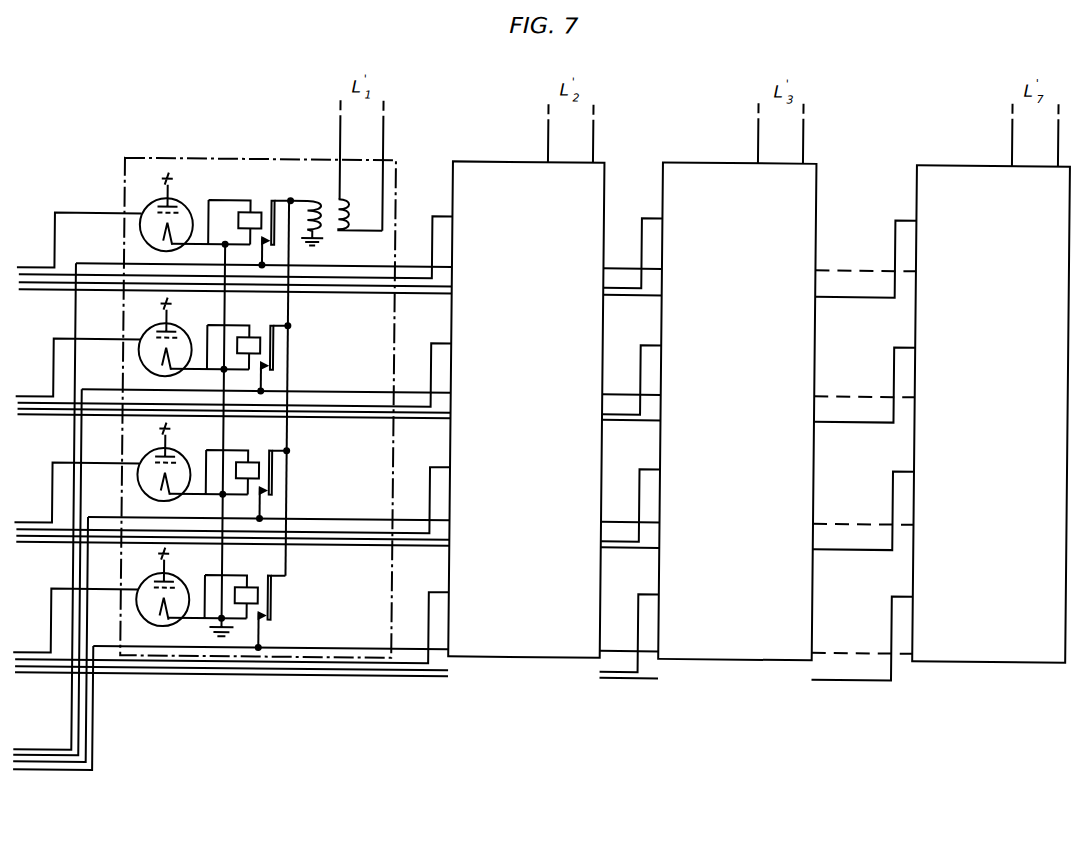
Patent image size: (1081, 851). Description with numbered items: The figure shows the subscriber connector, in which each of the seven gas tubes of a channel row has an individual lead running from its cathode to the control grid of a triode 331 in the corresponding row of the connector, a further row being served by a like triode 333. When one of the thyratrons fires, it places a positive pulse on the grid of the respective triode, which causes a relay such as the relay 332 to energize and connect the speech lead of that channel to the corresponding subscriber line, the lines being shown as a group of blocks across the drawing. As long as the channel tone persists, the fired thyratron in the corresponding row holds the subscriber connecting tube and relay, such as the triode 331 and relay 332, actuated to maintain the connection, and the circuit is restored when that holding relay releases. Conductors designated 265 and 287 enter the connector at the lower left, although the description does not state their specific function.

The triode 331 is at (185, 205).
The relay 332 is at (261, 200).
The triode 333 is at (187, 330).
The conductor 265 is at (74, 553).
The conductor 287 is at (81, 577).